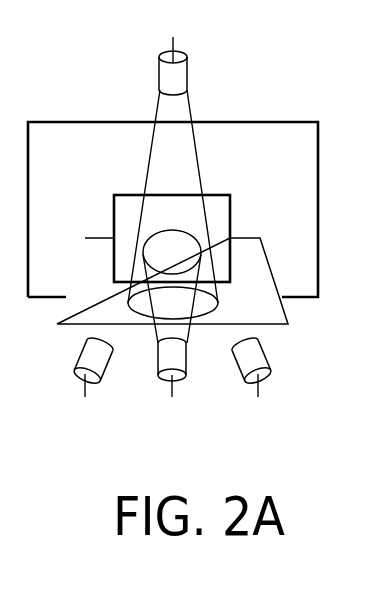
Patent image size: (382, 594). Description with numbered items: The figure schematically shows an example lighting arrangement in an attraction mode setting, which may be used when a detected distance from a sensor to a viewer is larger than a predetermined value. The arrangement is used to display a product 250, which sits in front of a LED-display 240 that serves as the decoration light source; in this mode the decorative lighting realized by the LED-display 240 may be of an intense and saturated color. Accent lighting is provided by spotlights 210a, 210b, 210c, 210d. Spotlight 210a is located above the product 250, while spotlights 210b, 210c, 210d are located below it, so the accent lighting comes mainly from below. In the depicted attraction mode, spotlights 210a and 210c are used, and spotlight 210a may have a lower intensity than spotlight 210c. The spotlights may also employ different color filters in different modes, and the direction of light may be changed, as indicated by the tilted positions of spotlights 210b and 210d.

The spotlight 210a is at (188, 66).
The spotlight 210b is at (78, 381).
The spotlight 210c is at (166, 385).
The spotlight 210d is at (252, 385).
The LED-display 240 is at (80, 155).
The product 250 is at (231, 201).